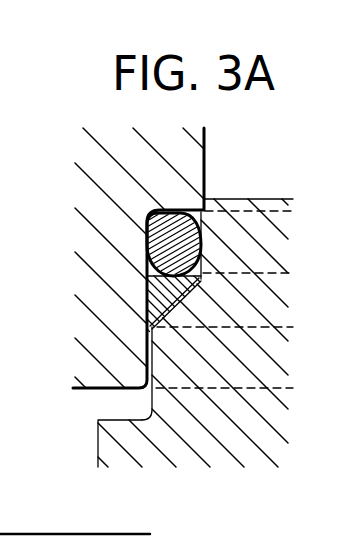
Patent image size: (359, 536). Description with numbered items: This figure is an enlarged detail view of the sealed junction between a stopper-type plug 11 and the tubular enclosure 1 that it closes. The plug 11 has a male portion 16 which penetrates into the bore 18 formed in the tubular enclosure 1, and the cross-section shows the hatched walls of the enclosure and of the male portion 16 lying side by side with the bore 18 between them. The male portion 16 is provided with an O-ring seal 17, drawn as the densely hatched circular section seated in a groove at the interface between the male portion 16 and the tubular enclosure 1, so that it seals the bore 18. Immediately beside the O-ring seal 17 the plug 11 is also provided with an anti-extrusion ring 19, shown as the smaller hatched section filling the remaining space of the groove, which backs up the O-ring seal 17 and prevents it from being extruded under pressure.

The tubular enclosure 1 is at (112, 352).
The plug 11 is at (127, 435).
The male portion 16 is at (270, 198).
The O-ring seal 17 is at (147, 243).
The bore 18 is at (231, 147).
The anti-extrusion ring 19 is at (163, 292).